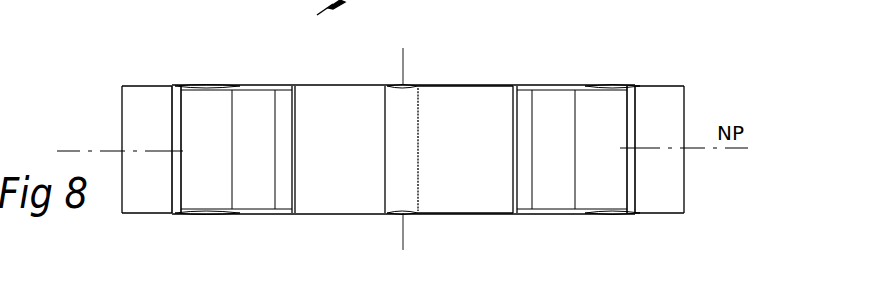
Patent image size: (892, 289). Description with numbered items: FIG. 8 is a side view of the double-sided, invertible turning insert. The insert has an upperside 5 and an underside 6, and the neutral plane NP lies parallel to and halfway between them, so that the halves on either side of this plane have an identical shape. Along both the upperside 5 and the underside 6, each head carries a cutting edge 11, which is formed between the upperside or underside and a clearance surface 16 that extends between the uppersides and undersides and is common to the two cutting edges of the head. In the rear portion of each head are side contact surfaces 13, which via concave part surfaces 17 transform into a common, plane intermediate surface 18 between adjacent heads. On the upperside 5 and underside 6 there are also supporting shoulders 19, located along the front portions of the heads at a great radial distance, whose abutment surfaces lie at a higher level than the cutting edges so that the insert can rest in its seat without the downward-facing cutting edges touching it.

The upperside 5 is at (492, 84).
The underside 6 is at (488, 216).
The cutting edge 11 is at (310, 84).
The side contact surface 13 is at (220, 188).
The clearance surface 16 is at (163, 188).
The concave part surface 17 is at (569, 187).
The intermediate surface 18 is at (285, 188).
The supporting shoulder 19 is at (200, 84).